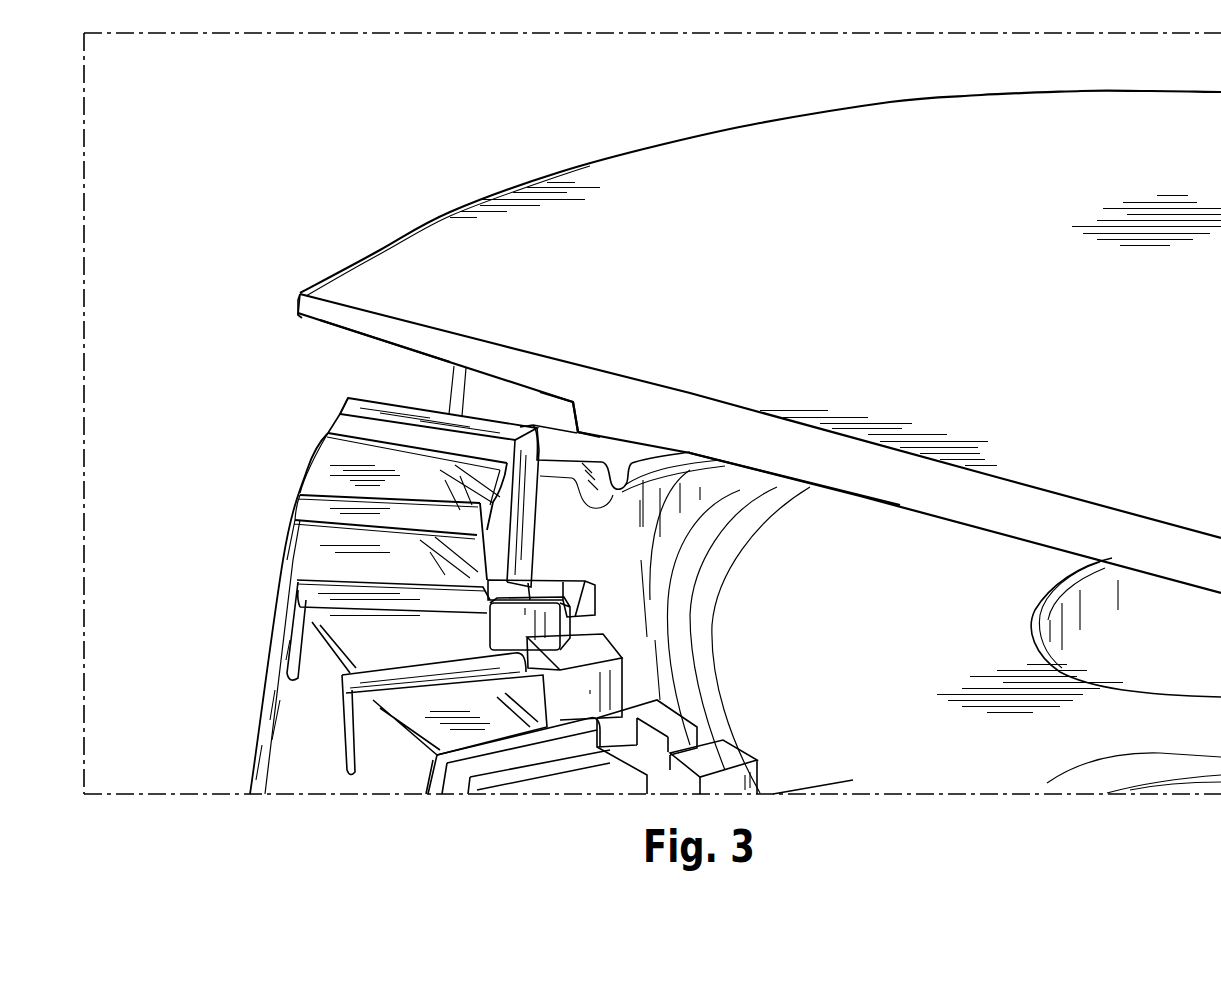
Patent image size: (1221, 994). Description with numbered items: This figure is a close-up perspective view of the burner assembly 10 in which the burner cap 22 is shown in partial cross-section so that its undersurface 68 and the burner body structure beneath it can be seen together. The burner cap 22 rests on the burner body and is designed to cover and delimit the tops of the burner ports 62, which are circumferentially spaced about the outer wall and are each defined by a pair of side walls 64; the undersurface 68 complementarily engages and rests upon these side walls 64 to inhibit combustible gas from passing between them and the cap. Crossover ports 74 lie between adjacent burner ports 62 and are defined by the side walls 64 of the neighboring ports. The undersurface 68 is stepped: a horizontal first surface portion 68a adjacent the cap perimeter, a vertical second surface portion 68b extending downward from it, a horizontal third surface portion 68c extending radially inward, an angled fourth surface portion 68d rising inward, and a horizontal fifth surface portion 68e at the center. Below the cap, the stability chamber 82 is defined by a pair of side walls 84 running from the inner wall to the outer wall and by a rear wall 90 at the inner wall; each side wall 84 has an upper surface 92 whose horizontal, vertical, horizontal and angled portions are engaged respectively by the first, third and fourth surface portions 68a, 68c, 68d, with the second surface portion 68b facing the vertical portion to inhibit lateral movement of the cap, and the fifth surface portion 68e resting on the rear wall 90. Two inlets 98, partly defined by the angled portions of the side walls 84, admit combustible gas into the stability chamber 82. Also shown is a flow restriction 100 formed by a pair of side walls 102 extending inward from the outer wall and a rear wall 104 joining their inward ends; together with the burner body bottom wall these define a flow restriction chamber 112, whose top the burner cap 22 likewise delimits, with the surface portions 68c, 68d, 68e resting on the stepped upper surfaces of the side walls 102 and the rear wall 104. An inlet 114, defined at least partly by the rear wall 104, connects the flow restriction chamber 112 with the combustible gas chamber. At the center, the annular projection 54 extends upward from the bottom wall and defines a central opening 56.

The burner assembly 10 is at (316, 244).
The burner cap 22 is at (430, 215).
The annular projection 54 is at (954, 685).
The opening 56 is at (1116, 647).
The burner ports 62 is at (297, 712).
The side walls 64 is at (327, 577).
The undersurface 68 is at (955, 528).
The first surface portion 68a is at (395, 352).
The second surface portion 68b is at (575, 412).
The third surface portion 68c is at (576, 440).
The fourth surface portion 68d is at (628, 448).
The fifth surface portion 68e is at (864, 506).
The crossover ports 74 is at (258, 568).
The stability chamber 82 is at (350, 380).
The side walls 84 is at (343, 403).
The rear wall 90 is at (683, 452).
The upper surface 92 is at (480, 420).
The inlets 98 is at (618, 496).
The flow restrictions 100 is at (760, 783).
The side walls 102 is at (620, 672).
The rear wall 104 is at (733, 752).
The flow restriction chamber 112 is at (516, 632).
The inlet 114 is at (618, 618).